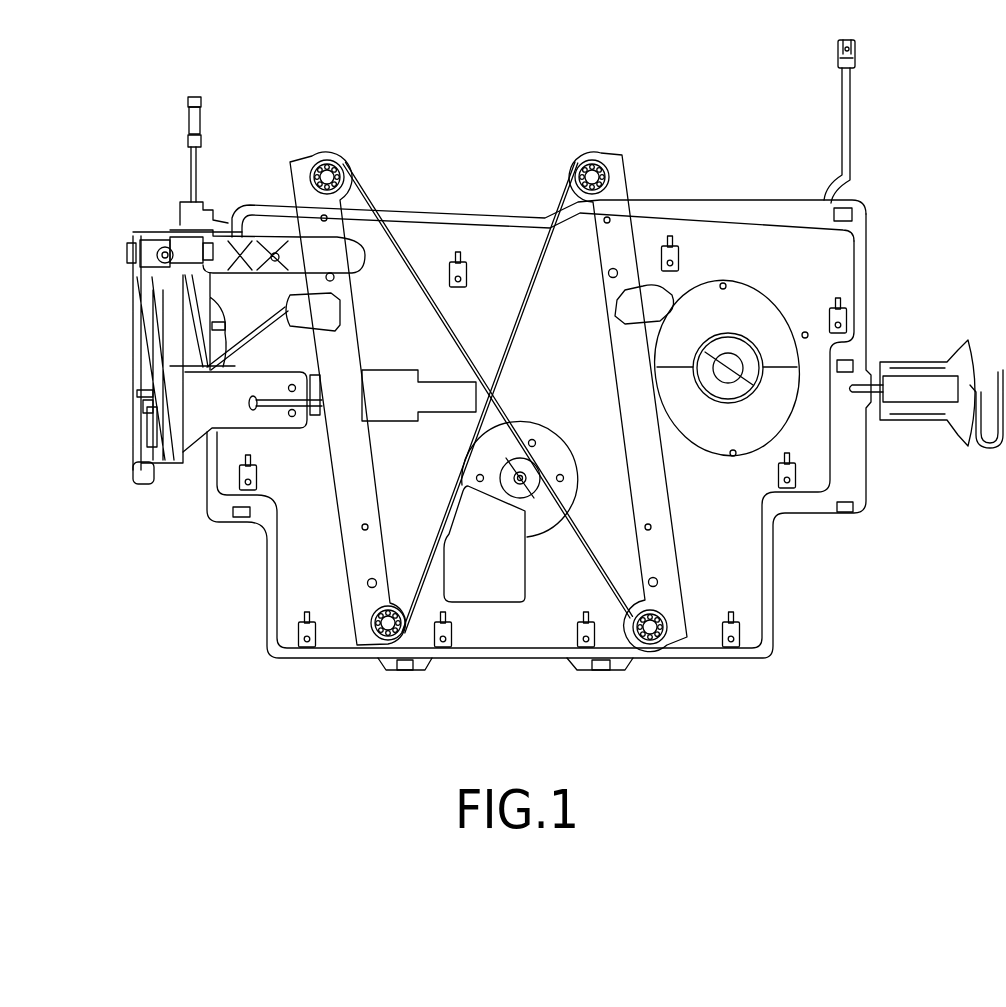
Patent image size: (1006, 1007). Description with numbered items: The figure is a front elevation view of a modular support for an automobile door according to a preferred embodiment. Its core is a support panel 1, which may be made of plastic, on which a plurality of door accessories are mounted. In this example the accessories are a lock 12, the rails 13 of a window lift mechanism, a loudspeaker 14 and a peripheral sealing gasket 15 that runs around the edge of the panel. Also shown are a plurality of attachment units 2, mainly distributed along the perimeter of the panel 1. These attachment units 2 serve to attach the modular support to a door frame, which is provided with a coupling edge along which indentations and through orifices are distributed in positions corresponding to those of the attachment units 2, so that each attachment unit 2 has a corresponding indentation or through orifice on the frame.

The support panel 1 is at (533, 628).
The attachment units 2 is at (722, 640).
The lock 12 is at (134, 388).
The rails 13 is at (368, 553).
The loudspeaker 14 is at (795, 305).
The peripheral sealing gasket 15 is at (738, 201).